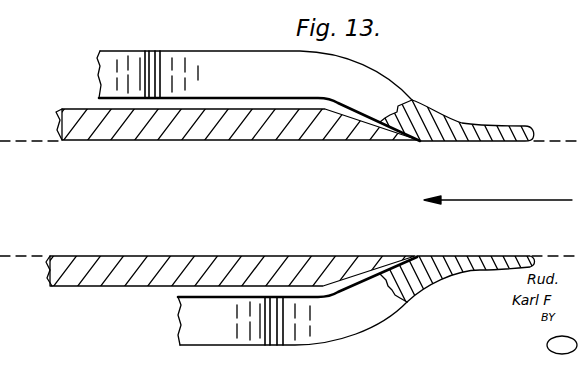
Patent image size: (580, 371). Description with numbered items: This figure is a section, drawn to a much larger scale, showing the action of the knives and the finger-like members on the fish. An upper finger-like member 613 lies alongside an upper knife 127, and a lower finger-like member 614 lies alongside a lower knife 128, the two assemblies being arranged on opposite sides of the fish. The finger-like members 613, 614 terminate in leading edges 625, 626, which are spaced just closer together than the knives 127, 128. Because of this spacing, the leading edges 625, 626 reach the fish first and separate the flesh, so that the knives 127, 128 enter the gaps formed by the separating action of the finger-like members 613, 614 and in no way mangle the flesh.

The finger-like member 613 is at (222, 70).
The knife 127 is at (264, 130).
The leading edge 625 is at (471, 143).
The knife 128 is at (215, 263).
The leading edge 626 is at (457, 256).
The finger-like member 614 is at (327, 323).